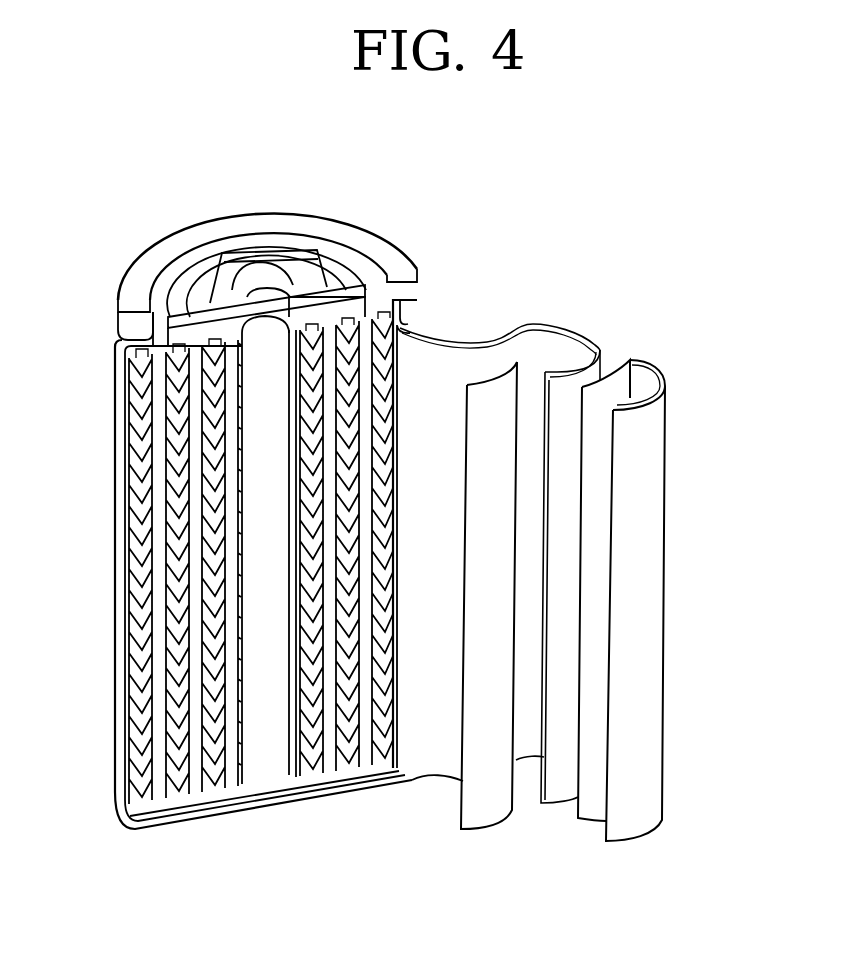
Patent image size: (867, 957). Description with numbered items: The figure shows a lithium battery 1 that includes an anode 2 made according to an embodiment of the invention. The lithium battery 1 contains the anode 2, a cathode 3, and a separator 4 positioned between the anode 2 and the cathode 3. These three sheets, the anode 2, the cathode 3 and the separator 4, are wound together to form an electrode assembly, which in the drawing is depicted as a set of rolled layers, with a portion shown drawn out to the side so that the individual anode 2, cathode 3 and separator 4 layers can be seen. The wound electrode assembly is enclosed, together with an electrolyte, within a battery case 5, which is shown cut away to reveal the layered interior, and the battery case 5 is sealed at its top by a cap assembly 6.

The lithium battery 1 is at (636, 304).
The anode 2 is at (653, 477).
The cathode 3 is at (563, 380).
The separator 4 is at (620, 385).
The battery case 5 is at (115, 750).
The cap assembly 6 is at (283, 250).